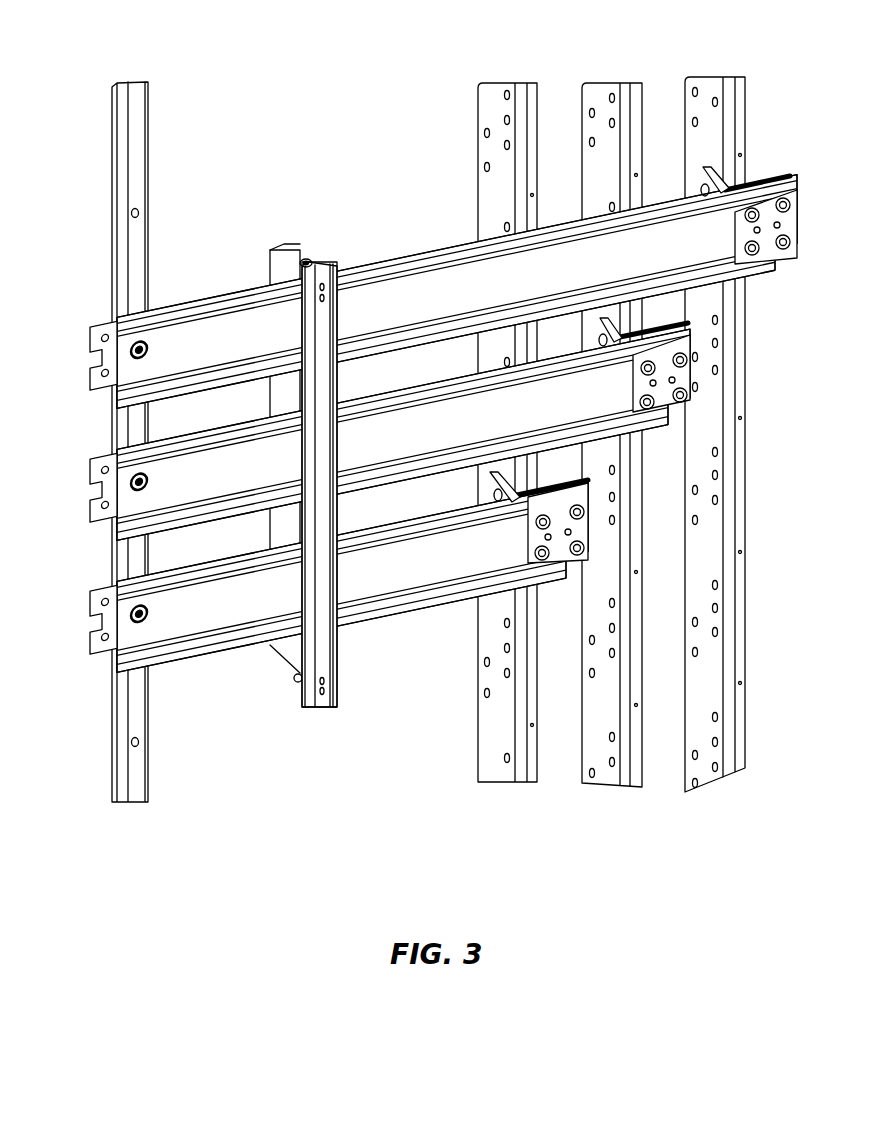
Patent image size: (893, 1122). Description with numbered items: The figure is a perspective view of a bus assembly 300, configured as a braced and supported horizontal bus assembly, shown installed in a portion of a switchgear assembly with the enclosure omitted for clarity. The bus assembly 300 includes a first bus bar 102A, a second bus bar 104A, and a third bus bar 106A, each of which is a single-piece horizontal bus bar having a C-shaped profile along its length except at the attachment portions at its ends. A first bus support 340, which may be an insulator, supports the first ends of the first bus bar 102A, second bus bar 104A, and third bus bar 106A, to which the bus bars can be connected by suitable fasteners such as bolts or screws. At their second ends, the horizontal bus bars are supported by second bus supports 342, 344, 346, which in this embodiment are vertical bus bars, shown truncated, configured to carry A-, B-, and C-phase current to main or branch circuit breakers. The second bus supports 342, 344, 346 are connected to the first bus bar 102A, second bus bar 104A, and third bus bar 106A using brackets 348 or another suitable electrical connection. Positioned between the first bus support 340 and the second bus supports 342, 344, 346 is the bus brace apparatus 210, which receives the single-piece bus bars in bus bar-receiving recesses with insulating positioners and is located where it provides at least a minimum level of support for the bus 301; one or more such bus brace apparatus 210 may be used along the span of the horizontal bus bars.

The bus assembly 300 is at (406, 404).
The bus 301 is at (405, 433).
The bus brace apparatus 210 is at (288, 228).
The first bus support 340 is at (103, 123).
The second bus support 342 is at (508, 82).
The second bus support 344 is at (604, 82).
The second bus support 346 is at (716, 78).
The bracket 348 is at (752, 188).
The first bus bar 102A is at (92, 316).
The second bus bar 104A is at (92, 452).
The third bus bar 106A is at (92, 585).